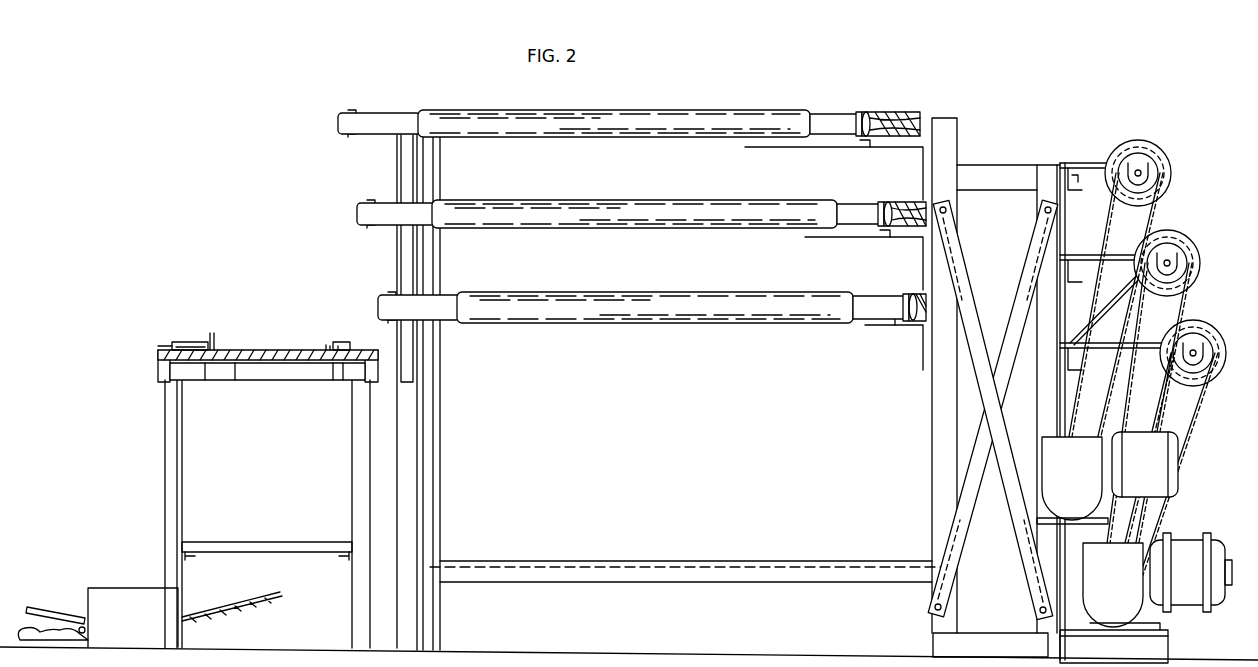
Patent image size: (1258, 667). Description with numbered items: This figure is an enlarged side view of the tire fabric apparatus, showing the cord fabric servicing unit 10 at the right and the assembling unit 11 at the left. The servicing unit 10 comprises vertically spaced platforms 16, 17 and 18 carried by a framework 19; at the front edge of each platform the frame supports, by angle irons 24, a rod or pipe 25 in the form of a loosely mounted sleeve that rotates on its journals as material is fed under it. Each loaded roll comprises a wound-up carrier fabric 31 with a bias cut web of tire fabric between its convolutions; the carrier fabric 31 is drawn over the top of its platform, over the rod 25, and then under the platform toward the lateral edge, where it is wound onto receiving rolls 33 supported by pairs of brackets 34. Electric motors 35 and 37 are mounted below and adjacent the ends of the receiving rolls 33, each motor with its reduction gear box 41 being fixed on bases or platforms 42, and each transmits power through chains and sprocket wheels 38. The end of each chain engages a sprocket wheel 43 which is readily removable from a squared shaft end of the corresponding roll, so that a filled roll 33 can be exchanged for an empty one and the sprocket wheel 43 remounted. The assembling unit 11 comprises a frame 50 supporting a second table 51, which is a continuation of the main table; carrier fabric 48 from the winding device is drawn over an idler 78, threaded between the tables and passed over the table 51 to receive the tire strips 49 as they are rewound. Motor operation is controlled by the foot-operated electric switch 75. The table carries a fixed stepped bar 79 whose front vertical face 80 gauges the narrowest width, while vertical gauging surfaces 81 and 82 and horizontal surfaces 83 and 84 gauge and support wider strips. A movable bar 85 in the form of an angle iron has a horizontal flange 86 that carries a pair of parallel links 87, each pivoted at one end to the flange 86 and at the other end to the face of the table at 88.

The cord fabric servicing unit 10 is at (629, 389).
The assembling unit 11 is at (267, 425).
The uppermost platform 16 is at (895, 110).
The platform 17 is at (896, 210).
The platform 18 is at (912, 298).
The framework 19 is at (978, 330).
The angle irons 24 is at (398, 148).
The rod or pipe 25 is at (404, 118).
The carrier fabric 31 is at (652, 112).
The receiving rolls 33 is at (1172, 166).
The brackets 34 is at (1078, 172).
The electric motor 35 is at (1192, 550).
The electric motor 37 is at (1180, 470).
The chains and sprocket wheels 38 is at (1160, 222).
The reduction gear box 41 is at (1104, 492).
The bases or platforms 42 is at (1150, 632).
The sprocket wheel 43 is at (1163, 178).
The carrier fabric 48 is at (252, 362).
The tire strips 49 is at (282, 350).
The frame 50 is at (352, 506).
The second table 51 is at (236, 382).
The foot-operated electric switch 75 is at (55, 620).
The idler 78 is at (290, 382).
The bar 79 is at (350, 346).
The front vertical face 80 is at (328, 350).
The vertical gauging surface 81 is at (332, 350).
The vertical gauging surface 82 is at (340, 350).
The horizontal surface 83 is at (333, 382).
The horizontal surface 84 is at (343, 382).
The movable bar 85 is at (214, 342).
The horizontal flange 86 is at (206, 382).
The parallel links 87 is at (190, 350).
The pivot on table face 88 is at (160, 346).